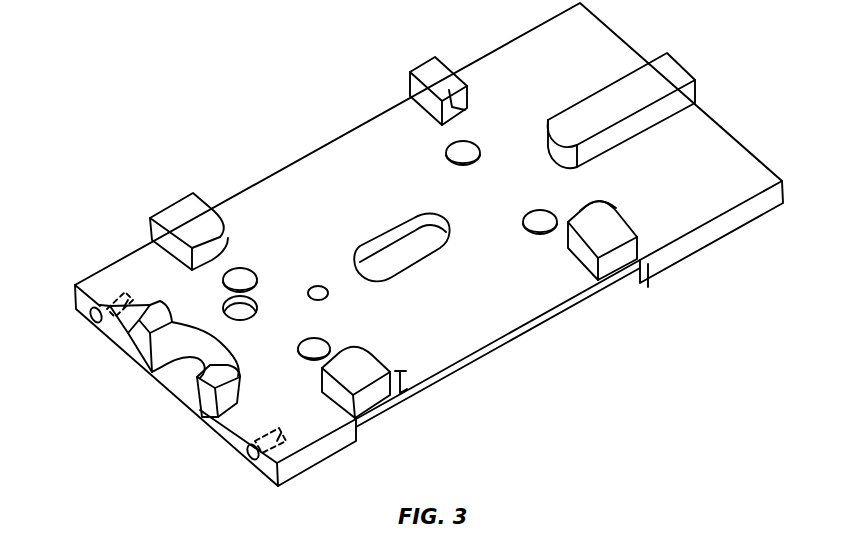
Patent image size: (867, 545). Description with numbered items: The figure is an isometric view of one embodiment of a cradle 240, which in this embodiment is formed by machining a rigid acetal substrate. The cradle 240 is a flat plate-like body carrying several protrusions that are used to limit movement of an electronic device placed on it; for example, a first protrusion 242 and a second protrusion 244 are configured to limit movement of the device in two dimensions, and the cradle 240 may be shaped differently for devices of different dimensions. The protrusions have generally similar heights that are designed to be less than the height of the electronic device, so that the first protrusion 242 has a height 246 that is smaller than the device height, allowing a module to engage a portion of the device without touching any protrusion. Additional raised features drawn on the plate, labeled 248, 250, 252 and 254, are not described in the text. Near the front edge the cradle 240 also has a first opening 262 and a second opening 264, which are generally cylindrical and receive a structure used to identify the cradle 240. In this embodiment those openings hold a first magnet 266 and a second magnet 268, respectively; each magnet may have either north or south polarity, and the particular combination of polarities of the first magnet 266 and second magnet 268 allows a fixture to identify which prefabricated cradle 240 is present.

The cradle 240 is at (168, 113).
The first protrusion 242 is at (377, 397).
The second protrusion 244 is at (697, 82).
The height 246 is at (405, 373).
The notched block 248 is at (438, 91).
The raised block 250 is at (189, 231).
The rounded block 252 is at (602, 240).
The front block 254 is at (356, 382).
The first opening 262 is at (236, 467).
The second opening 264 is at (90, 325).
The first magnet 266 is at (252, 460).
The second magnet 268 is at (96, 325).